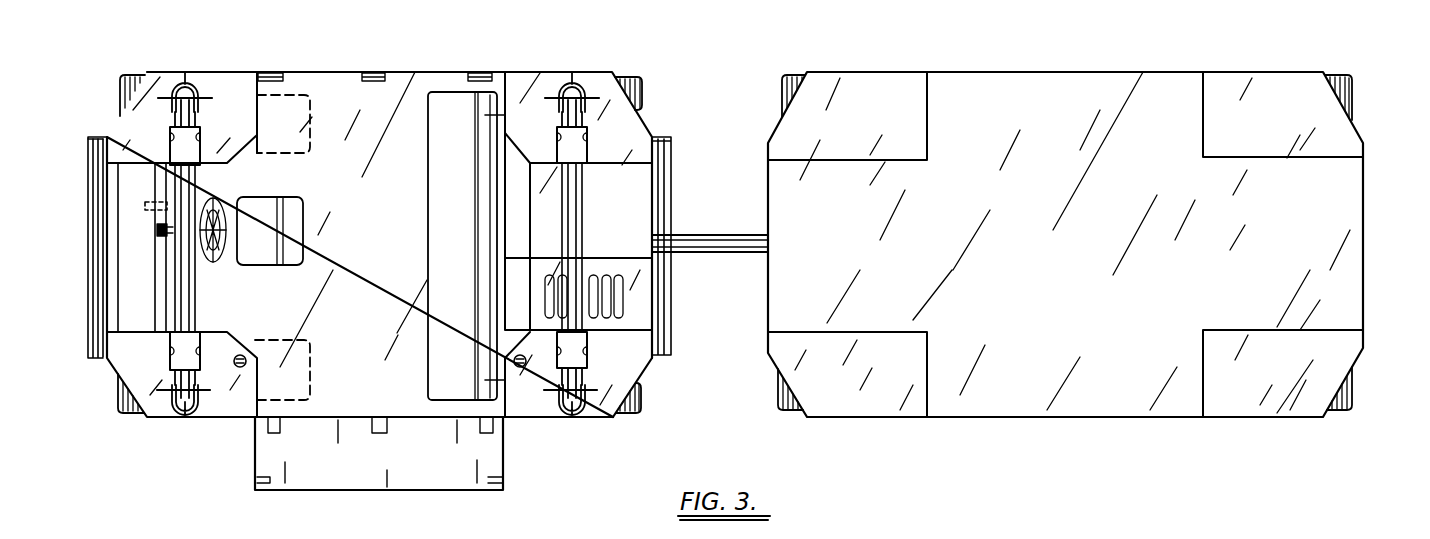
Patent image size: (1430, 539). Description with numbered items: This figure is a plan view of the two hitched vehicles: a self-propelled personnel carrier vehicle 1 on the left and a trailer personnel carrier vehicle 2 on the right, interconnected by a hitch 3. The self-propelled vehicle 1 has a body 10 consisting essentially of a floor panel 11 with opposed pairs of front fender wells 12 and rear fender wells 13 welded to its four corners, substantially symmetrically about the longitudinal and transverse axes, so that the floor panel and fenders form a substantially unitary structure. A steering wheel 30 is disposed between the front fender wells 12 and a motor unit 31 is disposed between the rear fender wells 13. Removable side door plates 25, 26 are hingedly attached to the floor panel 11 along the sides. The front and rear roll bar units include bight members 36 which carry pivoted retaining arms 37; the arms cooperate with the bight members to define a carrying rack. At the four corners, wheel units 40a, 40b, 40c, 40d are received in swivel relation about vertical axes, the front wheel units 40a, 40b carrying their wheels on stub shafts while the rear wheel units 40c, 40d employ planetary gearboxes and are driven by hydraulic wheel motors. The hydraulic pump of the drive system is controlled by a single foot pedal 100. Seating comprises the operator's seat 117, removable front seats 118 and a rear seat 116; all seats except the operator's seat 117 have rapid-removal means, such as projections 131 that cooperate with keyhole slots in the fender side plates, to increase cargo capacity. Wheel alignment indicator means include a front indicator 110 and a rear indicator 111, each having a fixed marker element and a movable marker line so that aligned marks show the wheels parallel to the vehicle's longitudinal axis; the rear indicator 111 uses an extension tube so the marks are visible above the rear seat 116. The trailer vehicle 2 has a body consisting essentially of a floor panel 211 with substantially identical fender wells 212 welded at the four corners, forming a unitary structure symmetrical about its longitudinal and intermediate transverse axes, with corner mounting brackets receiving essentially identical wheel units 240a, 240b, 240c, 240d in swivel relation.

The self-propelled personnel carrier vehicle 1 is at (655, 399).
The trailer personnel carrier vehicle 2 is at (1103, 420).
The hitch 3 is at (716, 245).
The body 10 is at (605, 71).
The floor panel 11 is at (369, 309).
The front fender wells 12 is at (226, 100).
The rear fender wells 13 is at (533, 107).
The removable side door plate 25 is at (396, 72).
The removable side door plate 26 is at (413, 490).
The steering wheel 30 is at (157, 237).
The motor unit 31 is at (643, 197).
The bight members 36 is at (189, 281).
The pivoted retaining arms 37 is at (177, 145).
The front wheel unit 40a is at (133, 414).
The front wheel unit 40b is at (135, 77).
The rear wheel unit 40c is at (648, 96).
The rear wheel unit 40d is at (629, 414).
The foot pedal 100 is at (146, 203).
The front indicator 110 is at (245, 350).
The rear indicator 111 is at (519, 370).
The rear seat 116 is at (441, 266).
The operator's seat 117 is at (291, 216).
The removable front seats 118 is at (303, 98).
The projections 131 is at (500, 116).
The floor panel 211 is at (1114, 314).
The fender wells 212 is at (879, 98).
The wheel unit 240a is at (790, 411).
The wheel unit 240b is at (800, 72).
The wheel unit 240c is at (1353, 80).
The wheel unit 240d is at (1344, 413).